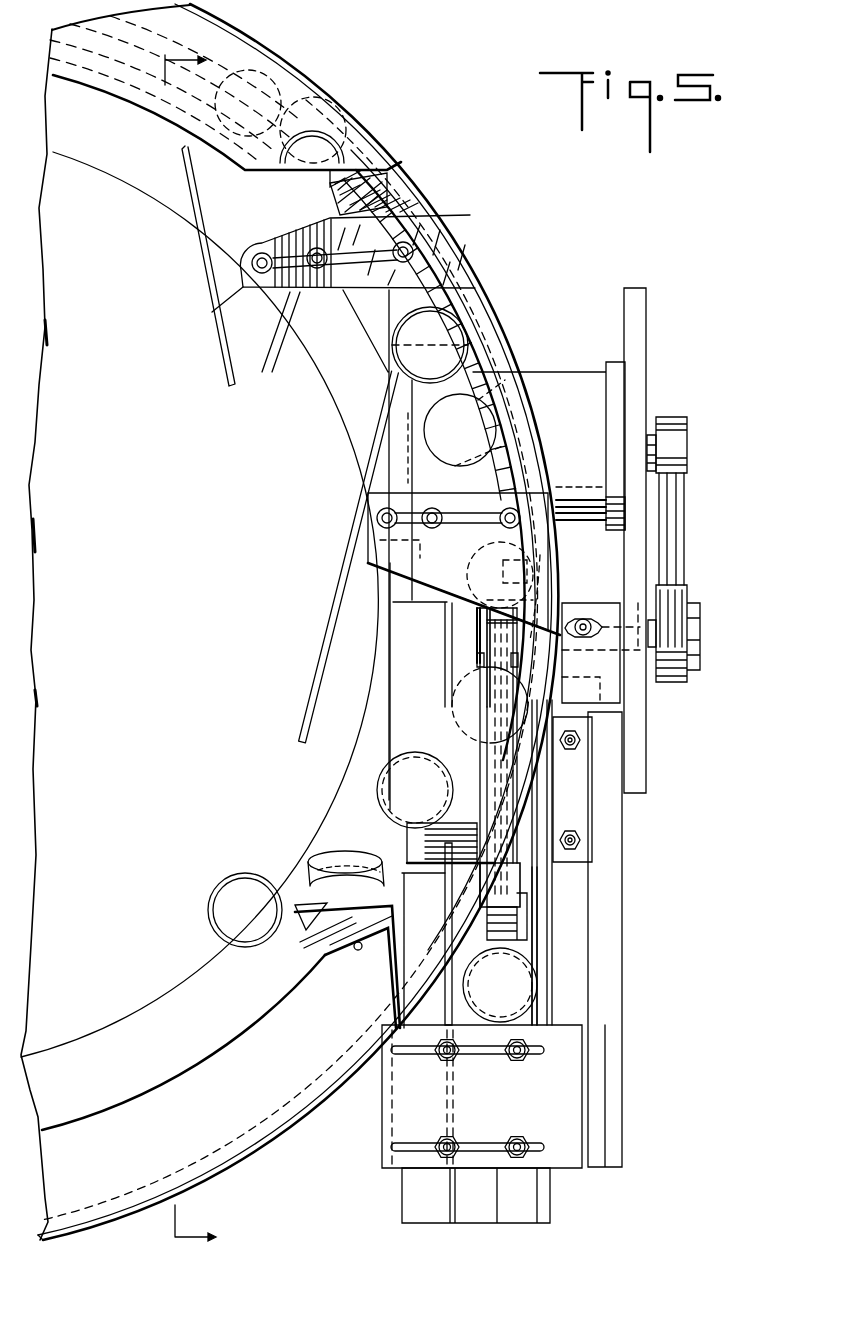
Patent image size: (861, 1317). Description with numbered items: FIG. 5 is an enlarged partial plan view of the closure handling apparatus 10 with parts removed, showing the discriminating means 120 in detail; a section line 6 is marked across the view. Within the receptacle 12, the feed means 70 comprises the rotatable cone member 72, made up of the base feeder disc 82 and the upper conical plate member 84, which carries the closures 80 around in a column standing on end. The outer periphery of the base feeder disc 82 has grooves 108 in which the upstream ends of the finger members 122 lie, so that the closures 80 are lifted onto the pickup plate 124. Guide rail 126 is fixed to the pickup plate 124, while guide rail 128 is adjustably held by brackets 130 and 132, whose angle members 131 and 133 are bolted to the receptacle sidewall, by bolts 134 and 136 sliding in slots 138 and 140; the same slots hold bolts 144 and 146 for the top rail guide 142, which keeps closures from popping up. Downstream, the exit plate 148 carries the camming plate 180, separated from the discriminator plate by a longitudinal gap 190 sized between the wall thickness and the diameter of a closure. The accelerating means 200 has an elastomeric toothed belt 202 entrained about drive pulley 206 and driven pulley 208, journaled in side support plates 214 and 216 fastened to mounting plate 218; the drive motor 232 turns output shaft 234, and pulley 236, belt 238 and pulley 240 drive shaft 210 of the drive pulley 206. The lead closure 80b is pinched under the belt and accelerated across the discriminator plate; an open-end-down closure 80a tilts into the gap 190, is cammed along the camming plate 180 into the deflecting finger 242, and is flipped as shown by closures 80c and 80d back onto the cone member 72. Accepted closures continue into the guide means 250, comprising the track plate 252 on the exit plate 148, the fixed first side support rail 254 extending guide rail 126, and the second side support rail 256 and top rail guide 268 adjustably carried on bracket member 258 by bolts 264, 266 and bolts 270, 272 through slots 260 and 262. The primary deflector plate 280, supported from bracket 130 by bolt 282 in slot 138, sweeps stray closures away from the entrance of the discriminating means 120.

The tire mounting apparatus 10 is at (361, 40).
The receptacle 12 is at (378, 150).
The section line 6- 6 is at (192, 648).
The feed means 70 is at (112, 158).
The rotatable cone member 72 is at (128, 392).
The closure 80 is at (333, 96).
The closure 80a is at (452, 716).
The lead closure 80b is at (477, 614).
The closure 80c is at (376, 798).
The closure 80d is at (330, 872).
The base feeder disc 82 is at (113, 134).
The upper conical plate member 84 is at (147, 677).
The grooves 108 is at (214, 18).
The discriminating means 120 is at (340, 759).
The finger members 122 is at (290, 183).
The pickup plate 124 is at (396, 320).
The guide rail 126 is at (478, 313).
The guide rail 128 is at (383, 346).
The bracket 130 is at (293, 292).
The angle member 131 is at (470, 269).
The bracket 132 is at (412, 577).
The angle member 133 is at (562, 586).
The bolt 134 is at (295, 228).
The bolt 136 is at (458, 561).
The slot 138 is at (290, 325).
The slot 140 is at (464, 423).
The top rail guide 142 is at (460, 368).
The bolt 144 is at (412, 258).
The bolt 146 is at (558, 492).
The exit plate 148 is at (410, 688).
The camming plate 180 is at (592, 803).
The longitudinal gap 190 is at (474, 766).
The accelerating means 200 is at (462, 742).
The elastomeric toothed belt 202 is at (505, 802).
The drive pulley 206 is at (477, 659).
The driven pulley 208 is at (527, 888).
The shaft 210 is at (648, 612).
The side support plate 214 is at (522, 868).
The side support plate 216 is at (477, 640).
The mounting plate 218 is at (648, 770).
The drive motor 232 is at (583, 370).
The output shaft 234 is at (647, 446).
The pulley 236 is at (690, 440).
The belt 238 is at (680, 496).
The pulley 240 is at (690, 594).
The deflecting finger 242 is at (292, 947).
The guide means 250 is at (672, 1035).
The track plate 252 is at (425, 968).
The first side support rail 254 is at (549, 918).
The second side support rail 256 is at (446, 905).
The bracket member 258 is at (400, 1112).
The slot 260 is at (484, 1052).
The slot 262 is at (490, 1143).
The bolt 264 is at (446, 1064).
The bolt 266 is at (442, 1141).
The top rail guide 268 is at (530, 956).
The bolt 270 is at (522, 1058).
The bolt 272 is at (525, 1141).
The primary deflector plate 280 is at (212, 296).
The bolt 282 is at (244, 258).